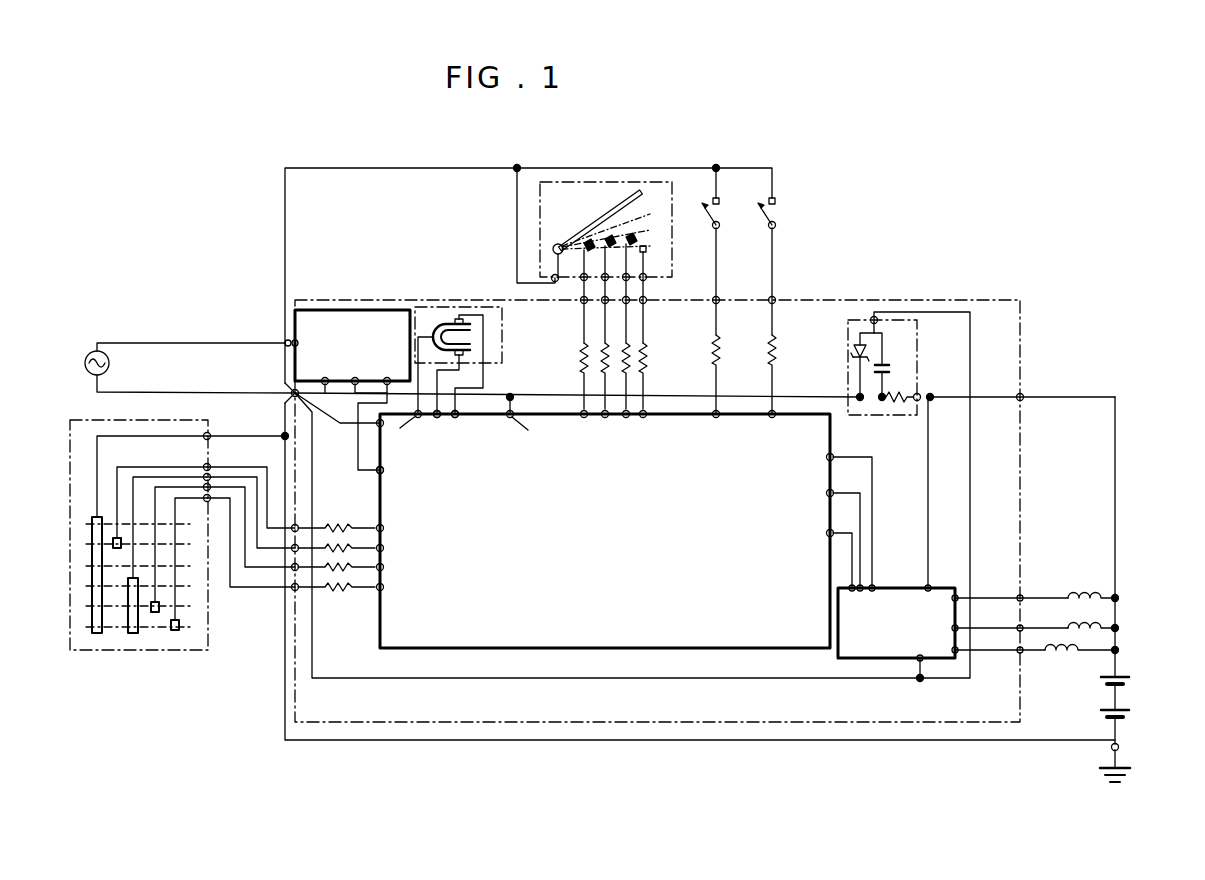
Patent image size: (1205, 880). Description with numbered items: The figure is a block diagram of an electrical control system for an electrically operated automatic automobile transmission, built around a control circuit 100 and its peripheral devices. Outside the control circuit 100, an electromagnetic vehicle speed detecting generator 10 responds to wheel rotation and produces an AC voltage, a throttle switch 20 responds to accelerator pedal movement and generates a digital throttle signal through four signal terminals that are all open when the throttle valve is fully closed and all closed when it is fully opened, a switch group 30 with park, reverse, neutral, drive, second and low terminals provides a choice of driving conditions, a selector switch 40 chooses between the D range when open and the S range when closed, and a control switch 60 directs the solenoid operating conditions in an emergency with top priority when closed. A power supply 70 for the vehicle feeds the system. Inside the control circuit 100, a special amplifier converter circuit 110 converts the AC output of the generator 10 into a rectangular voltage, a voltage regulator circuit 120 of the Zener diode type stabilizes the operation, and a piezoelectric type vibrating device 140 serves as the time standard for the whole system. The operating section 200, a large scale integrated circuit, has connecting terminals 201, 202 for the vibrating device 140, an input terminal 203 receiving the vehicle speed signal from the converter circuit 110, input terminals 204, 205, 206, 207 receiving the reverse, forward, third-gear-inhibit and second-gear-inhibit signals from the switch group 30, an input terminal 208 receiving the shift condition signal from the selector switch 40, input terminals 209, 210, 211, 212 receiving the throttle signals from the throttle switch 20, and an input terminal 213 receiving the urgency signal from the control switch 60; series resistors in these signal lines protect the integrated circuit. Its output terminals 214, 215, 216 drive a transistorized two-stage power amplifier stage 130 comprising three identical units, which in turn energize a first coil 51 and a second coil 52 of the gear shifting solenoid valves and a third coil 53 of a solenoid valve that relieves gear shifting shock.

The electromagnetic vehicle speed detecting generator 10 is at (109, 363).
The throttle switch 20 is at (590, 185).
The switch group 30 is at (205, 652).
The selector switch 40 is at (718, 212).
The control switch 60 is at (776, 214).
The first coil 51 is at (1077, 589).
The second coil 52 is at (1073, 624).
The third coil 53 is at (1061, 654).
The power supply 70 is at (1112, 691).
The control circuit 100 is at (1021, 367).
The special amplifier converter circuit 110 is at (343, 307).
The voltage regulator circuit 120 is at (844, 345).
The power amplifier stage 130 is at (889, 658).
The piezoelectric type vibrating device 140 is at (430, 307).
The operating section 200 is at (652, 649).
The connecting terminal 201 is at (438, 418).
The connecting terminal 202 is at (456, 418).
The input terminal 203 is at (383, 470).
The input terminal 204 is at (378, 526).
The input terminal 205 is at (384, 548).
The input terminal 206 is at (384, 569).
The input terminal 207 is at (377, 590).
The input terminal 208 is at (717, 418).
The input terminal 209 is at (585, 418).
The input terminal 210 is at (605, 418).
The input terminal 211 is at (627, 418).
The input terminal 212 is at (644, 418).
The input terminal 213 is at (773, 418).
The output terminal 214 is at (827, 457).
The output terminal 215 is at (827, 493).
The output terminal 216 is at (827, 533).